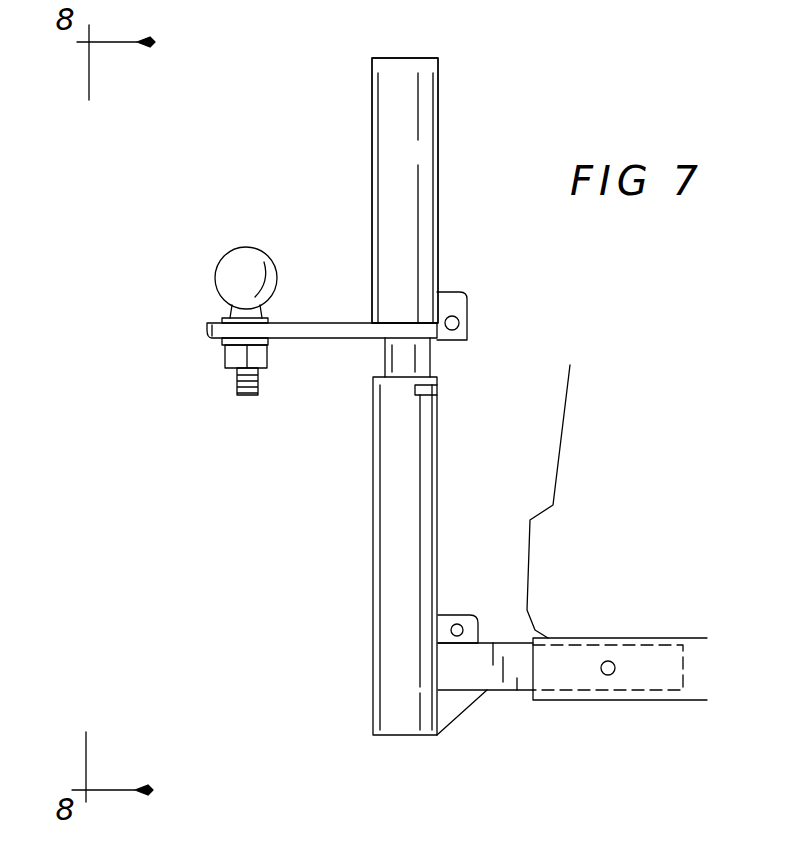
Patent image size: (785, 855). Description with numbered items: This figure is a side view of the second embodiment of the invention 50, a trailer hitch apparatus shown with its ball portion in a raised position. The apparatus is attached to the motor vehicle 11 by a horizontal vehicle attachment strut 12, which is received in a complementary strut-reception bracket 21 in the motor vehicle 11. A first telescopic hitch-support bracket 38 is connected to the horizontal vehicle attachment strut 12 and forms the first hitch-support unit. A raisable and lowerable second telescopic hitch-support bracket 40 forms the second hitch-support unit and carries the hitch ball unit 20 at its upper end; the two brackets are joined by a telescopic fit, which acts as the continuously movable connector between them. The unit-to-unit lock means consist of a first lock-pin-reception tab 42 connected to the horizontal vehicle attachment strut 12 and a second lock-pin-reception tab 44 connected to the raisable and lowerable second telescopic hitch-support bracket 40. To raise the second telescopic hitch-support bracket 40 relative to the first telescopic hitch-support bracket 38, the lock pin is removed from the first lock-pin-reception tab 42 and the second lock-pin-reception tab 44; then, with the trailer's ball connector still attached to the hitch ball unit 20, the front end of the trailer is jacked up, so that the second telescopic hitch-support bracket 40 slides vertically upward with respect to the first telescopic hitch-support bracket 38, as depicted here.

The second embodiment of the invention 50 is at (320, 228).
The raisable and lowerable second telescopic hitch-support bracket 40 is at (407, 137).
The second lock-pin-reception tab 44 is at (452, 304).
The hitch ball unit 20 is at (220, 258).
The first telescopic hitch-support bracket 38 is at (392, 605).
The first lock-pin-reception tab 42 is at (470, 617).
The horizontal vehicle attachment strut 12 is at (487, 673).
The strut-reception bracket 21 is at (698, 673).
The motor vehicle 11 is at (577, 412).